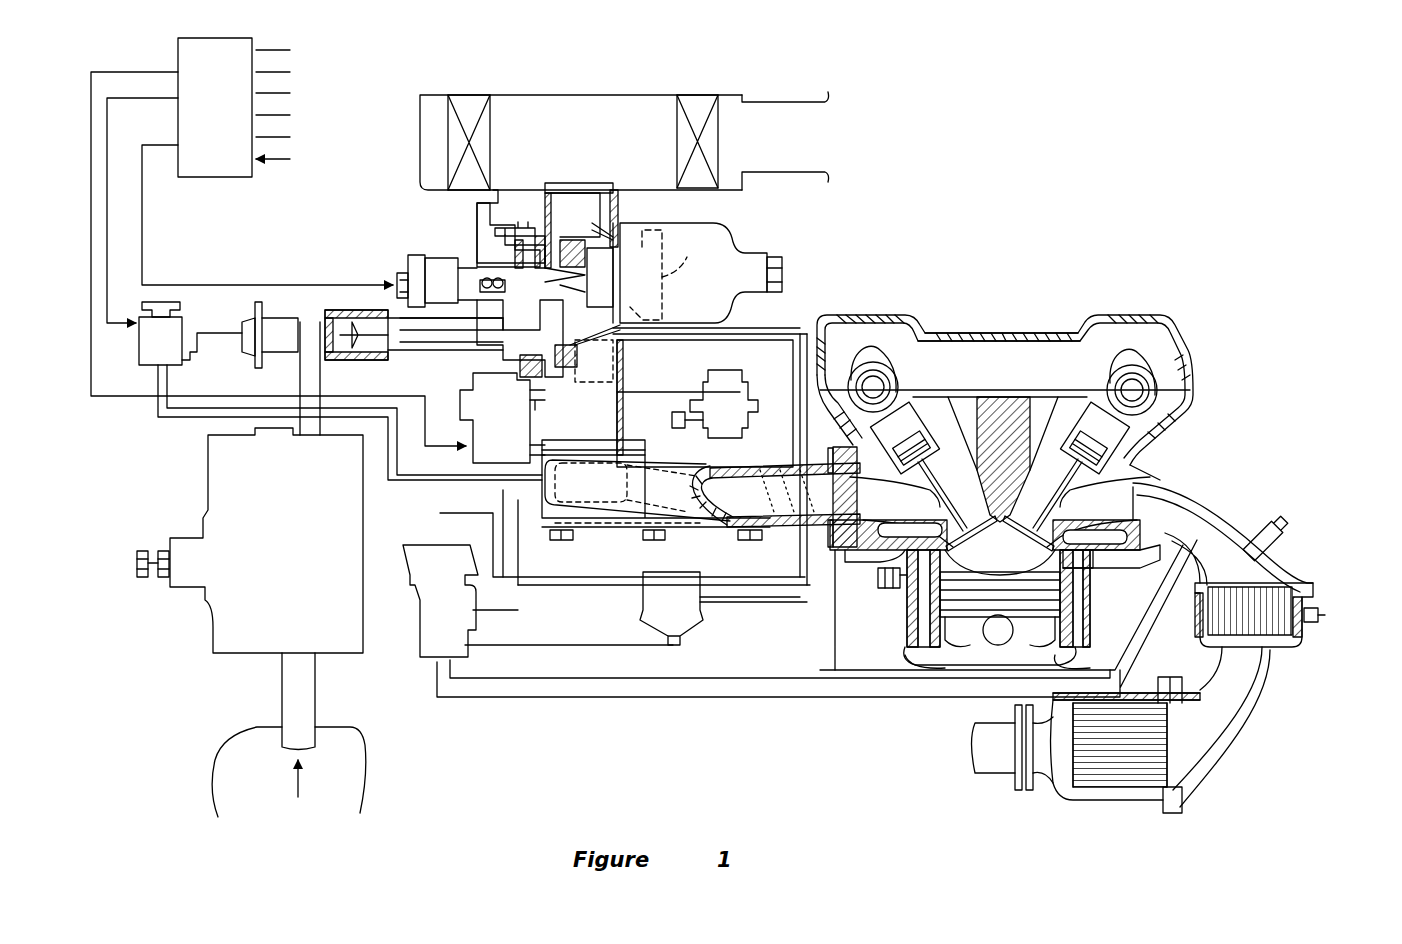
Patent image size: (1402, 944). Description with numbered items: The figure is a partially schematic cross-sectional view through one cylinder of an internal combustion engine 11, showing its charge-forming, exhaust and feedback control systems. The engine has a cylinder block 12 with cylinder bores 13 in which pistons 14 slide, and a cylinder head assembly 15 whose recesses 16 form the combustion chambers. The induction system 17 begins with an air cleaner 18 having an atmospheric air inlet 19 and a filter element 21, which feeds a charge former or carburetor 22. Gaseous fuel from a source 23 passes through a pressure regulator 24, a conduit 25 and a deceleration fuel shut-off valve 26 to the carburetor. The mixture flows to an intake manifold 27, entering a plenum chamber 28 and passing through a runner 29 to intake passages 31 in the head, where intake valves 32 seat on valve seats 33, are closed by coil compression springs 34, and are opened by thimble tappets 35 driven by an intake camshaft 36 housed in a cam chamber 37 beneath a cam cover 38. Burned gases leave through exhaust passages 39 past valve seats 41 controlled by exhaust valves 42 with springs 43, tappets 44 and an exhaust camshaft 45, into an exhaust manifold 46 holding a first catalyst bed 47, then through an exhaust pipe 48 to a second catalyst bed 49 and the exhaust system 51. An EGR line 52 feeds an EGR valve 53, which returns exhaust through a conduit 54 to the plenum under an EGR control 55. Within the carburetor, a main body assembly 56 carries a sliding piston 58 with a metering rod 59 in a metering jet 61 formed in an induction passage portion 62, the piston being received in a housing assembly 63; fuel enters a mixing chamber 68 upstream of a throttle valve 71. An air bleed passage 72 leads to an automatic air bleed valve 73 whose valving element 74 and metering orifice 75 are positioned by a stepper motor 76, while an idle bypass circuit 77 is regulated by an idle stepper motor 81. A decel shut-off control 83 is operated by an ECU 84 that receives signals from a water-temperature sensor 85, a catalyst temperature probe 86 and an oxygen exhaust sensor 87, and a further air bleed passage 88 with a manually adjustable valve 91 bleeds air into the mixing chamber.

The internal combustion engine 11 is at (1025, 310).
The cylinder block 12 is at (1100, 605).
The cylinder bores 13 is at (1075, 600).
The pistons 14 is at (935, 650).
The cylinder head assembly 15 is at (1158, 452).
The recesses / combustion chambers 16 is at (990, 645).
The induction system 17 is at (362, 118).
The air cleaner 18 is at (618, 92).
The atmospheric air inlet 19 is at (770, 100).
The filter element 21 is at (468, 105).
The charge former / carburetor 22 is at (778, 252).
The fuel source 23 is at (360, 770).
The pressure regulator 24 is at (208, 478).
The conduit 25 is at (300, 355).
The deceleration fuel shut-off valve 26 is at (300, 320).
The intake manifold 27 is at (380, 358).
The plenum chamber 28 is at (635, 527).
The runner 29 is at (700, 463).
The intake passages 31 is at (865, 498).
The intake valves 32 is at (945, 520).
The valve seats 33 is at (915, 600).
The coil compression springs 34 is at (975, 410).
The thimble tappets 35 is at (935, 405).
The intake camshaft 36 is at (890, 358).
The cam chamber 37 is at (1015, 385).
The cam cover 38 is at (1112, 312).
The exhaust passages 39 is at (1122, 520).
The valve seats 41 is at (1118, 558).
The exhaust valves 42 is at (1060, 520).
The coil compression springs 43 is at (1150, 476).
The thimble tappets 44 is at (1068, 405).
The exhaust camshaft 45 is at (1118, 368).
The exhaust manifold 46 is at (1235, 520).
The first catalyst bed 47 is at (1200, 610).
The exhaust pipe 48 is at (1243, 715).
The second catalyst bed 49 is at (1092, 790).
The exhaust system 51 is at (975, 773).
The EGR line 52 is at (665, 697).
The EGR valve 53 is at (437, 680).
The conduit 54 is at (490, 610).
The EGR control 55 is at (695, 620).
The main body assembly 56 is at (630, 370).
The sliding piston 58 is at (665, 275).
The metering rod 59 is at (585, 275).
The metering jet 61 is at (515, 310).
The induction passage portion 62 is at (585, 292).
The housing assembly 63 is at (713, 222).
The mixing chamber 68 is at (560, 230).
The throttle valve 71 is at (590, 375).
The air bleed passage 72 is at (478, 215).
The automatic air bleed valve 73 is at (428, 250).
The valving element 74 is at (470, 318).
The metering orifice 75 is at (487, 277).
The servo or stepper motor 76 is at (402, 268).
The idle bypass circuit 77 is at (502, 418).
The idle stepper motor 81 is at (470, 450).
The decel shut-off control / pressure conduit 83 is at (161, 300).
The ECU 84 is at (248, 40).
The water-temperature sensor 85 is at (878, 578).
The temperature probe 86 is at (1322, 605).
The exhaust sensor 87 is at (1270, 520).
The air bleed passage 88 is at (530, 225).
The manually adjustable valve 91 is at (492, 212).